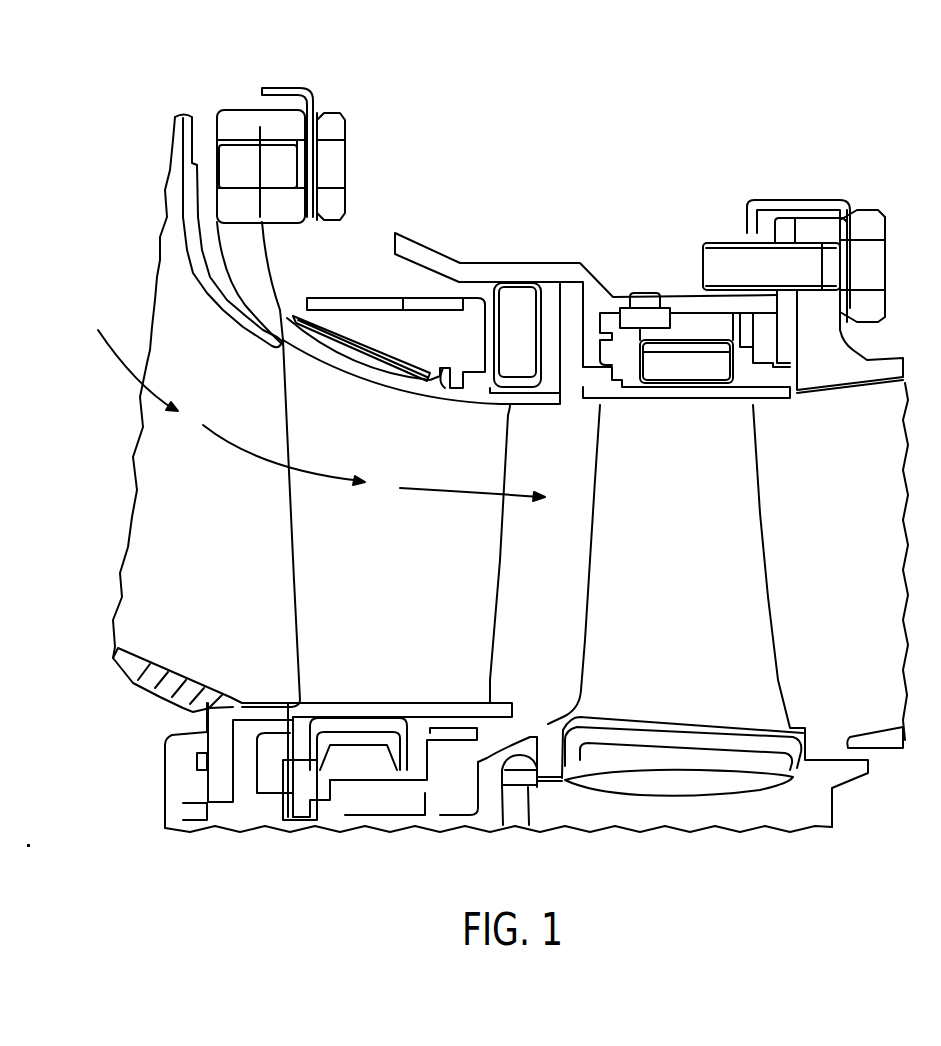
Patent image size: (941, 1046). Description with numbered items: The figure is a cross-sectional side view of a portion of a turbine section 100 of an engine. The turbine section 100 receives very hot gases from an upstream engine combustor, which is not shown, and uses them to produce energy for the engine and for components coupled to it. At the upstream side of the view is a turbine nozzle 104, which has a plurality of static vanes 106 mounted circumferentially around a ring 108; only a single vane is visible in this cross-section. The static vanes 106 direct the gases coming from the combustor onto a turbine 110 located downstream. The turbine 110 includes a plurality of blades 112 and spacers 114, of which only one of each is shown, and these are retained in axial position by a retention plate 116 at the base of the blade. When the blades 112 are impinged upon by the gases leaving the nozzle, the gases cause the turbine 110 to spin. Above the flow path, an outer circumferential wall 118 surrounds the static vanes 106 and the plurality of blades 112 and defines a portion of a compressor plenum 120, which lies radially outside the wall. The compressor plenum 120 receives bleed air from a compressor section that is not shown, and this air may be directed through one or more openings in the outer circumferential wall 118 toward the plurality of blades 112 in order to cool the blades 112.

The turbine section 100 is at (636, 138).
The turbine nozzle 104 is at (178, 530).
The static vanes 106 is at (355, 673).
The ring 108 is at (302, 765).
The turbine 110 is at (762, 808).
The blades 112 is at (700, 532).
The spacers 114 is at (712, 757).
The retention plate 116 is at (490, 783).
The outer circumferential wall 118 is at (533, 401).
The compressor plenum 120 is at (479, 178).